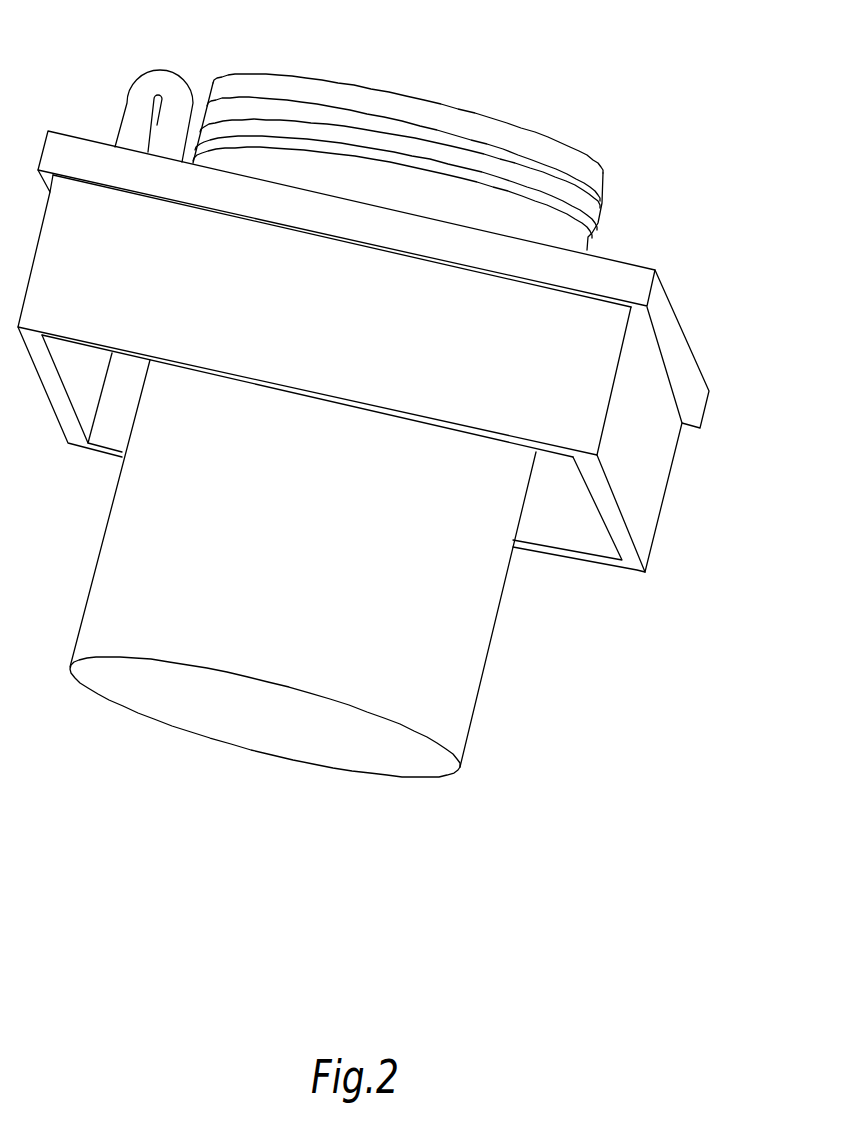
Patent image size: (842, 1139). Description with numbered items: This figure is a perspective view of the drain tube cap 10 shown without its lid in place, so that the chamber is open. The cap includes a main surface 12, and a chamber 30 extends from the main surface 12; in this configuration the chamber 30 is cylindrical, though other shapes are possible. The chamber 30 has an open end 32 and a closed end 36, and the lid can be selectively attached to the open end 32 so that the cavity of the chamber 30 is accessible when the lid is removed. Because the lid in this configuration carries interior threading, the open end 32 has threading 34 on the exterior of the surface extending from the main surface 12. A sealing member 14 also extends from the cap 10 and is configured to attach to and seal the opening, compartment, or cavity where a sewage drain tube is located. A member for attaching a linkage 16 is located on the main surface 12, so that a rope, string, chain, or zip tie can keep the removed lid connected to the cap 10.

The drain tube cap 10 is at (518, 45).
The main surface 12 is at (633, 263).
The sealing member 14 is at (650, 468).
The member for attaching a linkage 16 is at (162, 78).
The chamber 30 is at (122, 543).
The open end 32 is at (568, 150).
The threading 34 is at (598, 210).
The closed end 36 is at (225, 715).